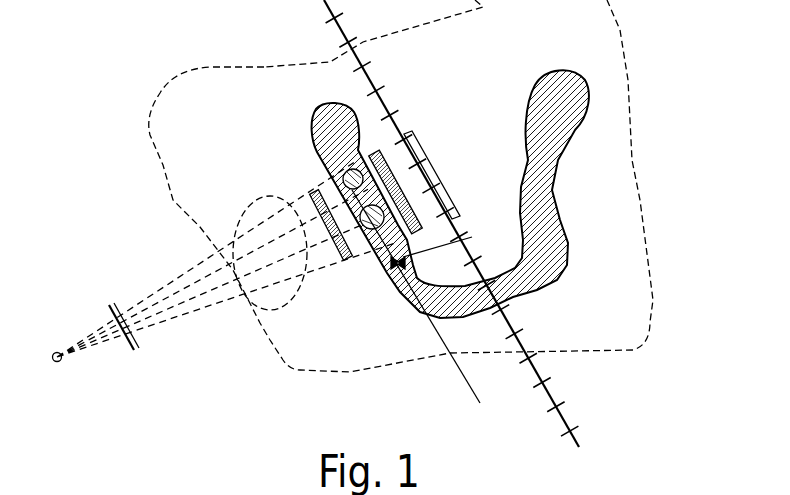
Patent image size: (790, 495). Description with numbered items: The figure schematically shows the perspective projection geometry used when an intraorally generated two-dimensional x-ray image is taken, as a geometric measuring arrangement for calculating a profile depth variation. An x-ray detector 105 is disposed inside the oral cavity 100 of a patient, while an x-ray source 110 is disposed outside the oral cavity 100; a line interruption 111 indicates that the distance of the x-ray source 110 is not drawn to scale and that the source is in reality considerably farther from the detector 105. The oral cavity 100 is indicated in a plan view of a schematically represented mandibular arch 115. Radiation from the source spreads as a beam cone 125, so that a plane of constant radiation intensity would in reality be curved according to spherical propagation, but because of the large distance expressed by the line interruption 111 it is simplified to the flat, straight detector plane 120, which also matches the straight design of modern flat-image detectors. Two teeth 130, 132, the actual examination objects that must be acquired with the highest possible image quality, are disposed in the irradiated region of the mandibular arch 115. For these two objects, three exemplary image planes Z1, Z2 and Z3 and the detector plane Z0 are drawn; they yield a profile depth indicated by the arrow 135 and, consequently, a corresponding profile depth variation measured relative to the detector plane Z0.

The oral cavity 100 is at (623, 20).
The x-ray detector 105 is at (427, 180).
The x-ray source 110 is at (60, 364).
The line interruption 111 is at (115, 305).
The mandibular arch 115 is at (587, 97).
The detector plane 120 is at (555, 393).
The beam cone 125 is at (250, 197).
The tooth 130 is at (397, 257).
The tooth 132 is at (310, 205).
The arrow 135 is at (427, 248).
The detector plane Z0 is at (466, 123).
The image plane Z1 is at (377, 160).
The image plane Z2 is at (425, 312).
The image plane Z3 is at (335, 163).